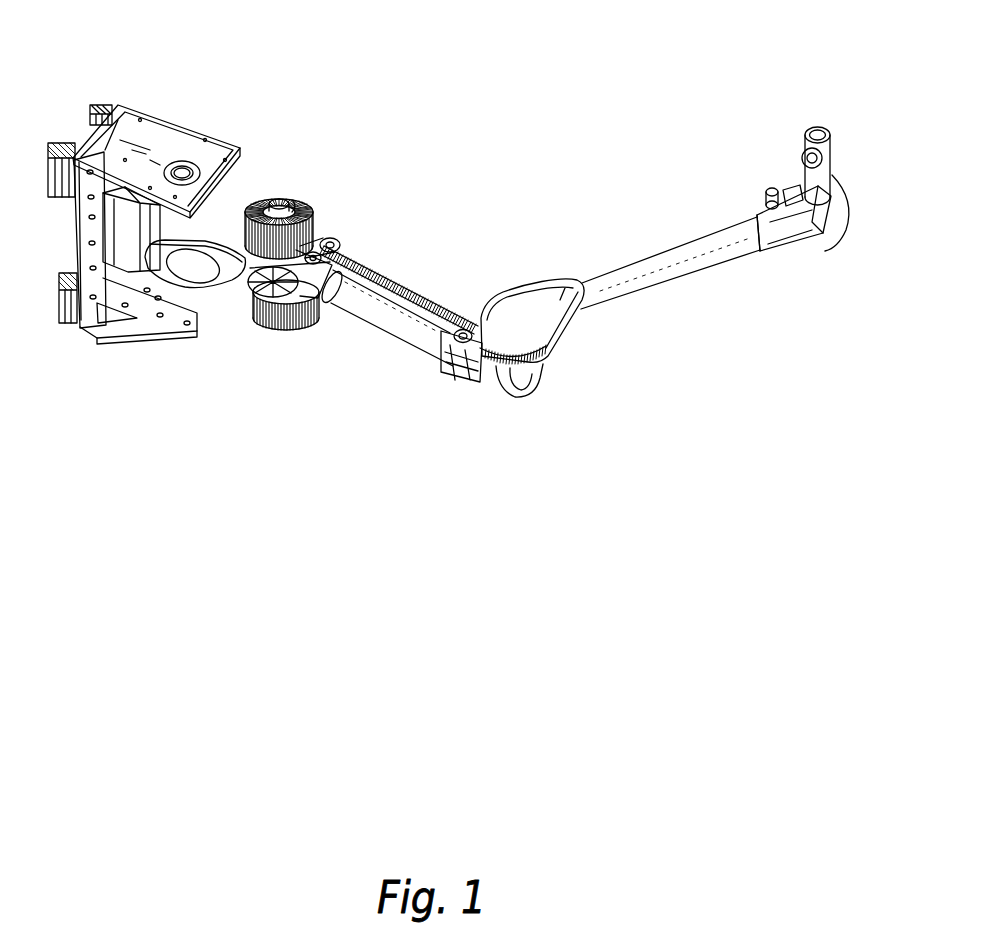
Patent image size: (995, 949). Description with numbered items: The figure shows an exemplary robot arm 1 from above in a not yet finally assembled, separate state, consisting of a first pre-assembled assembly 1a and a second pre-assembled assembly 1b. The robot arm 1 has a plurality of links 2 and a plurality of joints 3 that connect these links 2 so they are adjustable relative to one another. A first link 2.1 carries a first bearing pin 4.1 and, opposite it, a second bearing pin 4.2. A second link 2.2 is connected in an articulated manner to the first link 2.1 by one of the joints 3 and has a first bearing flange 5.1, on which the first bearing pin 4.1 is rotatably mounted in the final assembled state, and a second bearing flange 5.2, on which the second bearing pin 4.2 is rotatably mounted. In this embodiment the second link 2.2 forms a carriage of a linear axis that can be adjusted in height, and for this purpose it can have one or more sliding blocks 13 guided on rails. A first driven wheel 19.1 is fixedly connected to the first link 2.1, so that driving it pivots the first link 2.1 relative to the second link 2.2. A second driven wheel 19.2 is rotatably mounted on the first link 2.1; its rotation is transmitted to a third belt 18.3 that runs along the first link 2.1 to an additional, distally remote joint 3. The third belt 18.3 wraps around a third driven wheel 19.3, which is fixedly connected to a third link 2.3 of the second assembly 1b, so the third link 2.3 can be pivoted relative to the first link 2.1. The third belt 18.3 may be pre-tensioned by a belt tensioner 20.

The robot arm 1 is at (511, 111).
The first pre-assembled assembly 1a is at (158, 392).
The second pre-assembled assembly 1b is at (695, 373).
The links 2 is at (817, 180).
The first link 2.1 is at (405, 327).
The second link 2.2 is at (103, 325).
The third link 2.3 is at (663, 258).
The joints 3 is at (58, 150).
The sliding blocks 13 is at (95, 105).
The first bearing pin 4.1 is at (280, 203).
The second bearing pin 4.2 is at (288, 325).
The first bearing flange 5.1 is at (158, 148).
The second bearing flange 5.2 is at (190, 298).
The third belt 18.3 is at (433, 300).
The first driven wheel 19.1 is at (263, 318).
The second driven wheel 19.2 is at (295, 200).
The third driven wheel 19.3 is at (548, 348).
The belt tensioner 20 is at (332, 250).